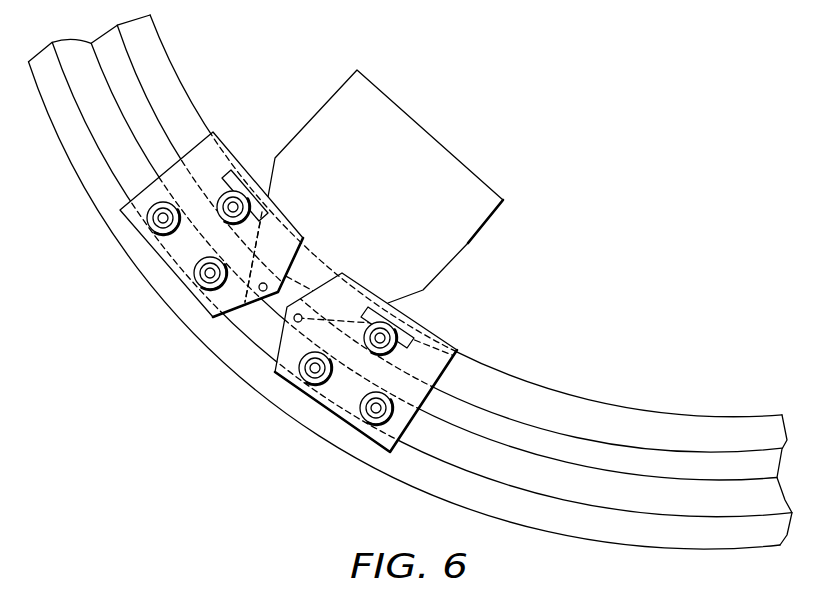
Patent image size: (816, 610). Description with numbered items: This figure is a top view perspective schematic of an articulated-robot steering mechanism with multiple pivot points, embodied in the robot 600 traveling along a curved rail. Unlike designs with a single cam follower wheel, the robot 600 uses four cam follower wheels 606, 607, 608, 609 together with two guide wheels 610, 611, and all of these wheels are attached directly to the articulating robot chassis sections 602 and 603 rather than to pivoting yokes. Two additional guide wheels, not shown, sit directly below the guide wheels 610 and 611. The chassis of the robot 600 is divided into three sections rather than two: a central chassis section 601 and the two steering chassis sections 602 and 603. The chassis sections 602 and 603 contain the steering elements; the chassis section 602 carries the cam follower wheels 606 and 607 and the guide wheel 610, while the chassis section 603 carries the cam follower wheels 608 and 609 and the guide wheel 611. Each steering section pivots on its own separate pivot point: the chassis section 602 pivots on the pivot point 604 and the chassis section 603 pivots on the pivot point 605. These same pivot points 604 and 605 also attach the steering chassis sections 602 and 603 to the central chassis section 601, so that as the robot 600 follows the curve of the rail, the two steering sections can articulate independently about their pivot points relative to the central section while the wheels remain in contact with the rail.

The robot 600 is at (422, 269).
The central chassis section 601 is at (414, 186).
The articulating robot chassis section 602 is at (422, 266).
The articulating robot chassis section 603 is at (422, 269).
The pivot point 604 is at (285, 315).
The pivot point 605 is at (304, 317).
The cam follower wheel 606 is at (178, 234).
The cam follower wheel 607 is at (211, 289).
The cam follower wheel 608 is at (328, 383).
The cam follower wheel 609 is at (397, 426).
The guide wheel 610 is at (227, 192).
The guide wheel 611 is at (398, 358).